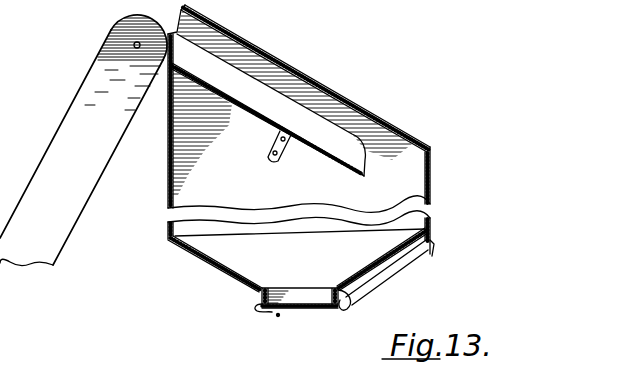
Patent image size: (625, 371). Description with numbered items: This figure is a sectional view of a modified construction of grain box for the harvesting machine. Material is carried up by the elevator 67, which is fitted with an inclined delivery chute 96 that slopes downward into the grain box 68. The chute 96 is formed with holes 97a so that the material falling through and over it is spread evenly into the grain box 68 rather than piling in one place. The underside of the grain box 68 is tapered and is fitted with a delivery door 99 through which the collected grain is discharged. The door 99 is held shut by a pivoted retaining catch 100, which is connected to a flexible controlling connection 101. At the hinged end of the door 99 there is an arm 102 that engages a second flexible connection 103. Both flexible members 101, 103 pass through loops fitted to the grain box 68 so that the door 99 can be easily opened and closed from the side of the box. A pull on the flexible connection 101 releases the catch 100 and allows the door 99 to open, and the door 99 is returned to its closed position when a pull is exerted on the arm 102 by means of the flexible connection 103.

The elevator 67 is at (85, 140).
The grain box 68 is at (301, 148).
The inclined delivery chute 96 is at (316, 151).
The holes 97a is at (266, 117).
The delivery door 99 is at (308, 309).
The pivoted retaining catch 100 is at (344, 306).
The flexible controlling connection 101 is at (397, 256).
The arm 102 is at (268, 310).
The flexible connection 103 is at (388, 277).